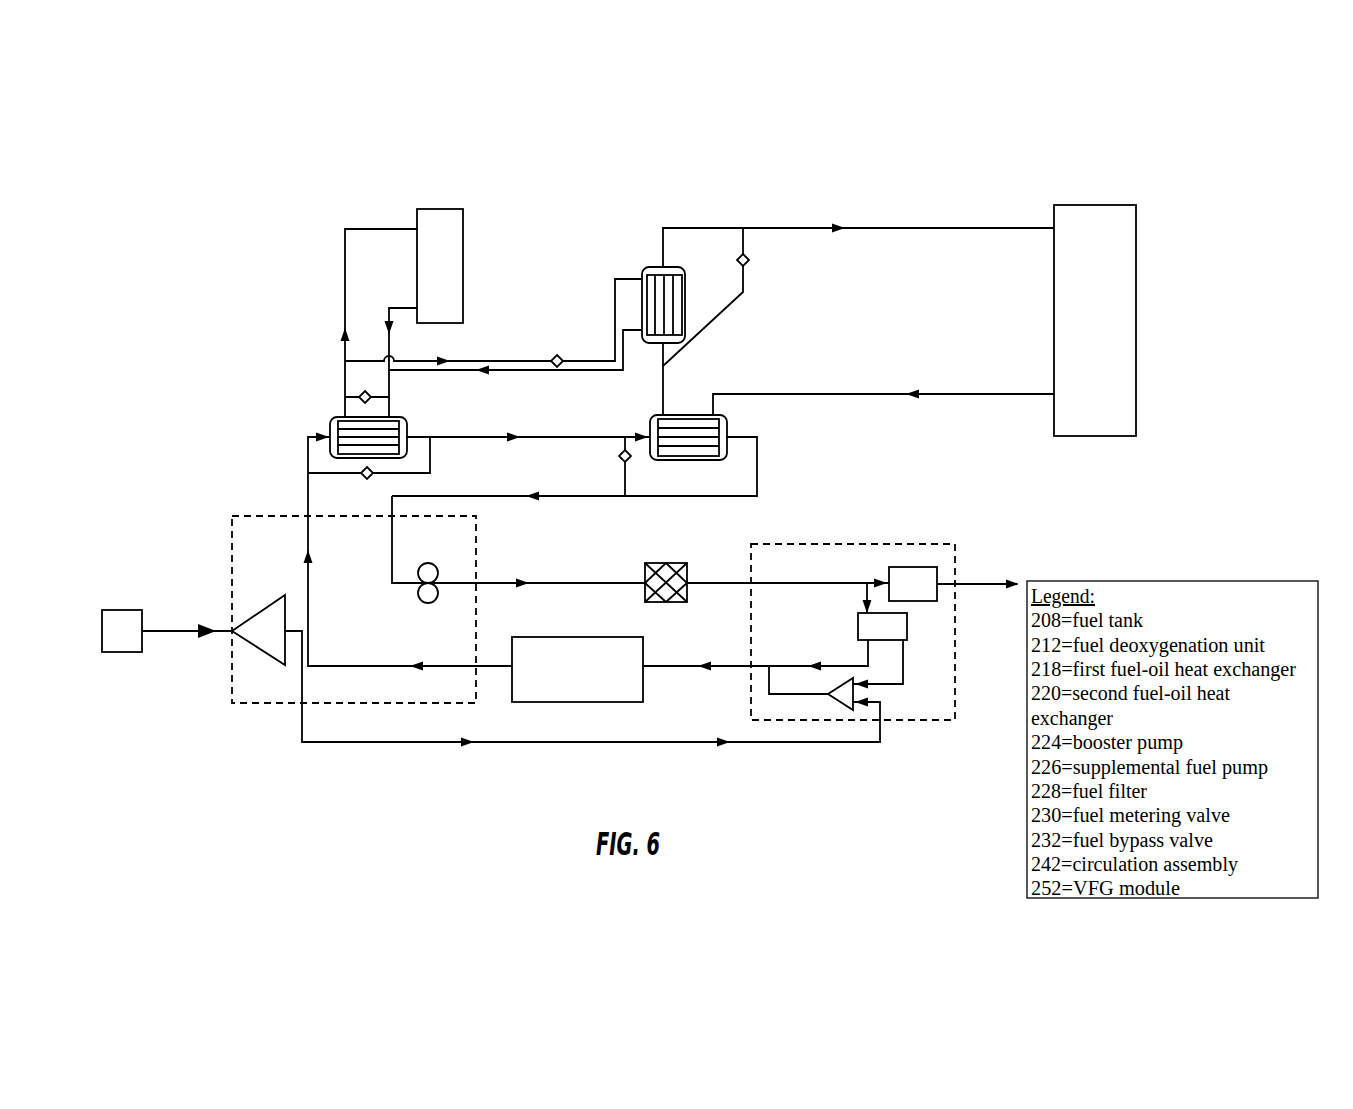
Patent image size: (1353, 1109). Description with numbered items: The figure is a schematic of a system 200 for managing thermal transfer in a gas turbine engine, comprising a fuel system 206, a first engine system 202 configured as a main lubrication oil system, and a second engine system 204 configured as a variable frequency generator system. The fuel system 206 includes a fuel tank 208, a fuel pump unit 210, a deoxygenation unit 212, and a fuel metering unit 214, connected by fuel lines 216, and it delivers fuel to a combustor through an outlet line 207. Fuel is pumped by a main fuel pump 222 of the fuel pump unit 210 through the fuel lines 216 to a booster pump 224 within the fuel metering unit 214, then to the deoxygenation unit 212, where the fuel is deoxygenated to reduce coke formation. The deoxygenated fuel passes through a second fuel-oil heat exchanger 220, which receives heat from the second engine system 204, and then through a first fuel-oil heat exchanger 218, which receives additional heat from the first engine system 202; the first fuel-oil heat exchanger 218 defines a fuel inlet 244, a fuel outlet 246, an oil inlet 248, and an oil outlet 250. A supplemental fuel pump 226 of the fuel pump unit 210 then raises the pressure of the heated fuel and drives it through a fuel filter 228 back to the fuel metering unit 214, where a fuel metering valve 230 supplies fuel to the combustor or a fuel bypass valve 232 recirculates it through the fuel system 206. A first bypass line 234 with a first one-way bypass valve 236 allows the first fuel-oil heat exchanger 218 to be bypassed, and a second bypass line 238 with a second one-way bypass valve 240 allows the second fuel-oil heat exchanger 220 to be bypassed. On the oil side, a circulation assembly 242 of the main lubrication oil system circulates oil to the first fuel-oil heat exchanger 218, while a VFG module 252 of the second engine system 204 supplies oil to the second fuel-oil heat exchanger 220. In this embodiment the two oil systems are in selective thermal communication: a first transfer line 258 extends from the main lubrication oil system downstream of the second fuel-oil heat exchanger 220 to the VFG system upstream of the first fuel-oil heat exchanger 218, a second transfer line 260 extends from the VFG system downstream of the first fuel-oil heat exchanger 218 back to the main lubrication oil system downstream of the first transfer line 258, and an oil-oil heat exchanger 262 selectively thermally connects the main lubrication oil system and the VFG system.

The system 200 is at (684, 166).
The first engine system 202 is at (918, 206).
The second engine system 204 is at (378, 196).
The fuel system 206 is at (236, 480).
The outlet line 207 is at (990, 582).
The fuel tank 208 is at (116, 610).
The fuel pump unit 210 is at (278, 704).
The deoxygenation unit 212 is at (593, 681).
The fuel metering unit 214 is at (906, 543).
The fuel lines 216 is at (541, 436).
The first fuel-oil heat exchanger 218 is at (728, 420).
The second fuel-oil heat exchanger 220 is at (345, 425).
The main fuel pump 222 is at (264, 606).
The booster pump 224 is at (834, 707).
The supplemental fuel pump 226 is at (437, 567).
The fuel filter 228 is at (668, 563).
The fuel metering valve 230 is at (925, 567).
The fuel bypass valve 232 is at (907, 627).
The first bypass line 234 is at (627, 482).
The first one-way bypass valve 236 is at (614, 448).
The second bypass line 238 is at (431, 455).
The second one-way bypass valve 240 is at (365, 488).
The circulation assembly 242 is at (1091, 214).
The fuel inlet 244 is at (645, 434).
The fuel outlet 246 is at (737, 447).
The oil inlet 248 is at (704, 405).
The oil outlet 250 is at (673, 405).
The VFG module 252 is at (463, 263).
The first transfer line 258 is at (527, 372).
The second transfer line 260 is at (493, 360).
The oil-oil heat exchanger 262 is at (686, 289).